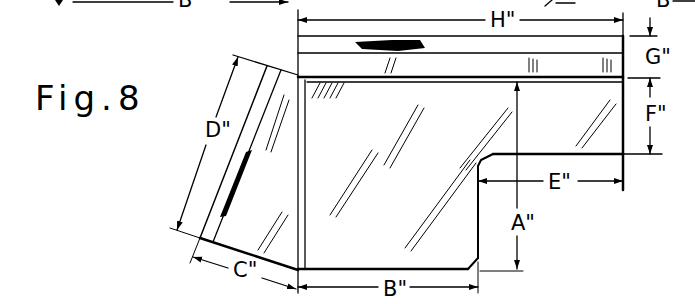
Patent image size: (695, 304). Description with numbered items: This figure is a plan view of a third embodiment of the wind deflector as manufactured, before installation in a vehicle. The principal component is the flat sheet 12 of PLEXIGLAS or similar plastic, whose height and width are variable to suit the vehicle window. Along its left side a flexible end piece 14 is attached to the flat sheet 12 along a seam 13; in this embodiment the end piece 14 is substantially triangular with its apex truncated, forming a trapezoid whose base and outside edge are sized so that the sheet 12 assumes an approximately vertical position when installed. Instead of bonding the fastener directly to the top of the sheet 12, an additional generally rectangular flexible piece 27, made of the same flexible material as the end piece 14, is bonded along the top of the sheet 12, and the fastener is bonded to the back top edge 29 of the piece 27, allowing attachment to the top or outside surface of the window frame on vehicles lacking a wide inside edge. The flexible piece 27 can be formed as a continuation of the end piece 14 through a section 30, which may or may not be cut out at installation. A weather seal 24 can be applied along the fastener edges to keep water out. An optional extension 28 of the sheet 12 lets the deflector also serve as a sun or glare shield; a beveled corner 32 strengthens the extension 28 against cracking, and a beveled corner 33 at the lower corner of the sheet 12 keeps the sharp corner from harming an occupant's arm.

The flat sheet 12 is at (412, 196).
The seam 13 is at (380, 80).
The flexible end piece 14 is at (272, 213).
The weather seal 24 is at (433, 37).
The flexible piece 27 is at (579, 76).
The extension 28 is at (579, 126).
The back top edge 29 is at (304, 43).
The section 30 is at (299, 75).
The beveled corner 32 is at (481, 158).
The beveled corner 33 is at (470, 264).